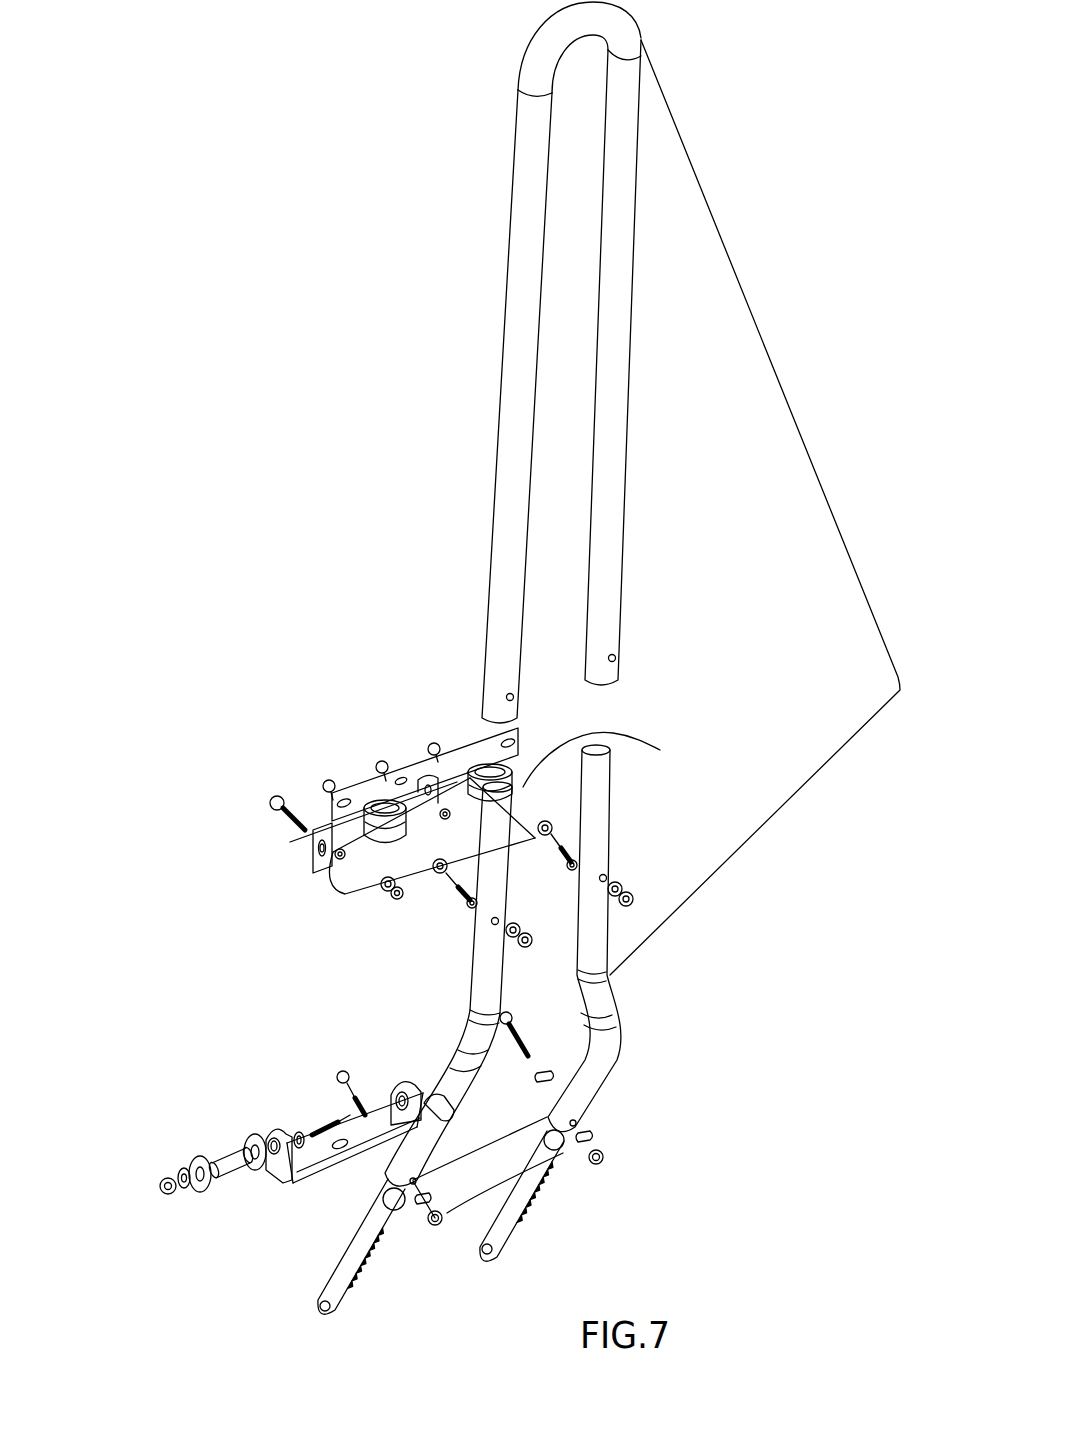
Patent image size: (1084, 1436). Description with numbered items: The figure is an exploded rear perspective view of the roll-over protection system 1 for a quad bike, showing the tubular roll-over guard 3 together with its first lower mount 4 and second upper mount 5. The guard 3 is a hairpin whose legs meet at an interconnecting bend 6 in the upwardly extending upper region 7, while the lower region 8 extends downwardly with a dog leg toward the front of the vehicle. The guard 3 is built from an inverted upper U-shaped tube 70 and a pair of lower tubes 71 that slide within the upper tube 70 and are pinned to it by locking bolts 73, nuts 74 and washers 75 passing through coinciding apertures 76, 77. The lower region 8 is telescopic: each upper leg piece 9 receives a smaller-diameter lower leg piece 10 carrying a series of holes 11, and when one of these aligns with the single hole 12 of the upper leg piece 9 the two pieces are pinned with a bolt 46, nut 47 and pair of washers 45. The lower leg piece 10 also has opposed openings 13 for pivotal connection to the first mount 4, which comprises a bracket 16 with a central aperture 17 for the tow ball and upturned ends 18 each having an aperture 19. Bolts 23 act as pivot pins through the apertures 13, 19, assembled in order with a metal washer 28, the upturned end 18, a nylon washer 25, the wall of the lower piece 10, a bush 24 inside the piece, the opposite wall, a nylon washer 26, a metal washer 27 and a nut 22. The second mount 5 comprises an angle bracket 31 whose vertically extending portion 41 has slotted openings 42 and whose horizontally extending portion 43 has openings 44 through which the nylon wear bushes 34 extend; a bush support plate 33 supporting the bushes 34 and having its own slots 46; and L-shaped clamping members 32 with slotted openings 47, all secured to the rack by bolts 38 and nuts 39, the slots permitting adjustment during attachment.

The roll-over protection system 1 is at (705, 1240).
The roll-over guard 3 is at (490, 466).
The first lower mount 4 is at (208, 1143).
The second upper mount 5 is at (322, 923).
The bend 6 is at (536, 57).
The upper region 7 is at (768, 507).
The lower region 8 is at (630, 1018).
The upper leg piece 9 is at (370, 1045).
The lower leg piece 10 is at (357, 1280).
The holes 11 is at (513, 1223).
The hole 12 is at (567, 1110).
The openings 13 is at (318, 1310).
The bracket 16 is at (308, 1170).
The central aperture 17 is at (340, 1148).
The upturned ends 18 is at (267, 1133).
The aperture 19 is at (274, 1137).
The nuts 22 is at (158, 1188).
The bolts 23 is at (316, 1137).
The bushes 24 is at (227, 1172).
The anti-rattle nylon washers 25 is at (250, 1138).
The anti-rattle nylon washers 26 is at (200, 1195).
The metal washers 27 is at (180, 1186).
The metal washers 28 is at (297, 1133).
The angle bracket 31 is at (343, 897).
The L-shaped clamping members 32 is at (313, 847).
The bush support plate 33 is at (424, 772).
The nylon wear bushes 34 is at (378, 798).
The bolts 38 is at (323, 777).
The nuts 39 is at (390, 895).
The vertically extending portion 41 is at (313, 857).
The slits/slotted openings 42 is at (343, 787).
The horizontally extending portion 43 is at (367, 900).
The openings 44 is at (337, 885).
The washers 45 is at (545, 1077).
The bolt / slits 46 is at (416, 767).
The nut / slotted opening 47 is at (590, 1138).
The upper U-shaped tube 70 is at (622, 568).
The lower tubes 71 is at (611, 762).
The locking bolts 73 is at (457, 893).
The nuts 74 is at (627, 896).
The washers 75 is at (610, 890).
The apertures 76 is at (495, 921).
The apertures 77 is at (612, 657).